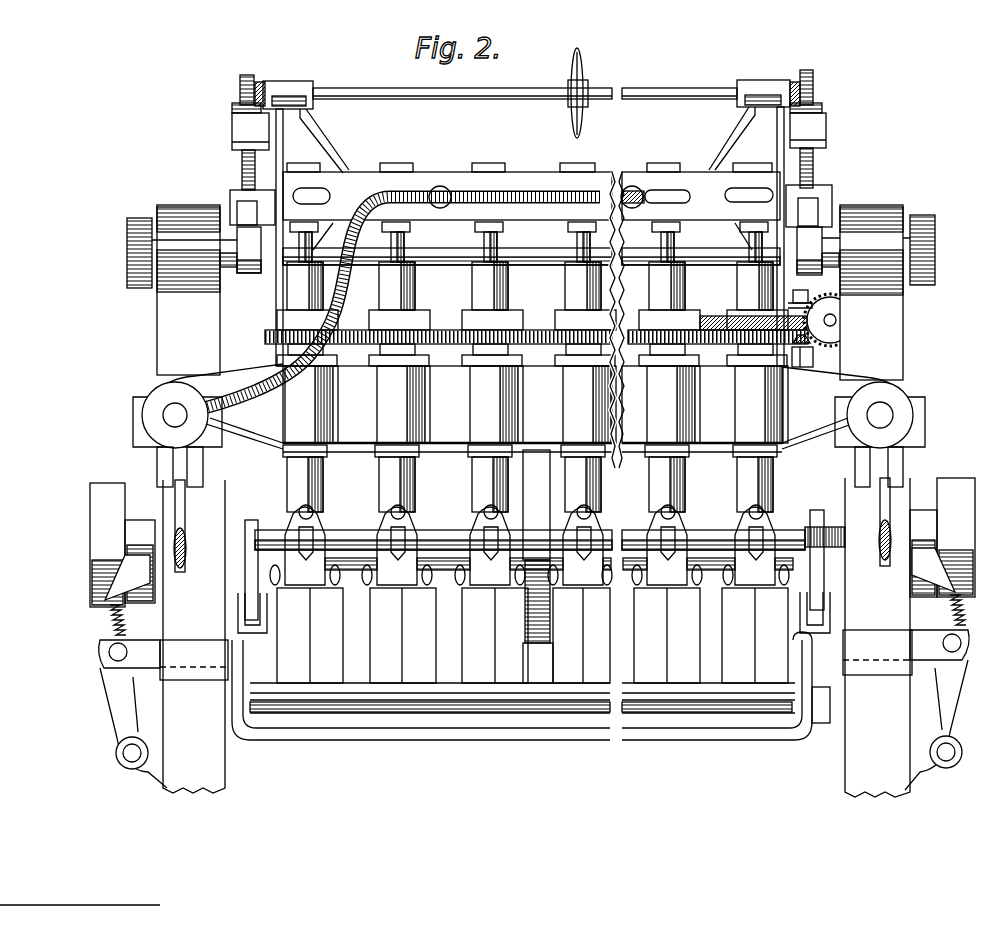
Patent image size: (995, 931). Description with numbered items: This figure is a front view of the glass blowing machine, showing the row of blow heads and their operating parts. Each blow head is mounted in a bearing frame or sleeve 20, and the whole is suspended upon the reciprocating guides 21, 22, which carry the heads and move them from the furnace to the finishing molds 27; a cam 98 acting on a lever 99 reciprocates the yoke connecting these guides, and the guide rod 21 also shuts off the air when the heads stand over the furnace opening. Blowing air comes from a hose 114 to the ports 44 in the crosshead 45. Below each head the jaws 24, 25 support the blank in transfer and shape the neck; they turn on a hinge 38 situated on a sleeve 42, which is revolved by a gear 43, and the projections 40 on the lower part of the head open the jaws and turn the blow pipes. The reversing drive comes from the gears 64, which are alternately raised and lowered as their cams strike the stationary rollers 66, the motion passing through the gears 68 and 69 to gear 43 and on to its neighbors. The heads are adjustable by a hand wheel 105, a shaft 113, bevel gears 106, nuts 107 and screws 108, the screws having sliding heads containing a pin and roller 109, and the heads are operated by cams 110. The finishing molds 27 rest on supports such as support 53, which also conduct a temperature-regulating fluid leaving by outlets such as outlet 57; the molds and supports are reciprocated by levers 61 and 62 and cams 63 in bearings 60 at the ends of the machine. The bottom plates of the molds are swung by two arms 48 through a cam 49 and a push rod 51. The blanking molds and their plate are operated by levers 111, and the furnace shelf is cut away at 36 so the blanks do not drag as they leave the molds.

The shaft 113 is at (517, 90).
The hand wheel 105 is at (588, 63).
The bevel gears 106 is at (292, 64).
The nuts 107 is at (236, 112).
The screws 108 is at (246, 168).
The pin and roller 109 is at (245, 212).
The cams 110 is at (244, 272).
The ports 44 is at (318, 200).
The crosshead 45 is at (465, 190).
The hose 114 is at (536, 312).
The gear 69 is at (720, 322).
The gears 64 is at (845, 320).
The gear 68 is at (838, 343).
The stationary rollers 66 is at (815, 303).
The gear 43 is at (560, 334).
The bearing frame or sleeve 20 is at (532, 409).
The reciprocating guide 21 is at (160, 415).
The reciprocating guide 22 is at (895, 422).
The sleeve 42 is at (388, 476).
The jaw 25 is at (658, 528).
The outlet 57 is at (745, 538).
The hinge 38 is at (767, 508).
The jaw 24 is at (382, 522).
The projections 40 is at (478, 572).
The cut-away portion of furnace shelf 36 is at (535, 455).
The cam 98 is at (535, 478).
The lever 99 is at (548, 493).
The finishing mold 27 is at (532, 635).
The support 53 is at (140, 660).
The arms 48 is at (824, 712).
The bearings 60 is at (200, 672).
The levers 111 is at (175, 508).
The cams 63 is at (138, 562).
The lever 62 is at (108, 625).
The lever 61 is at (122, 722).
The cam 49 is at (265, 507).
The push rod 51 is at (242, 612).